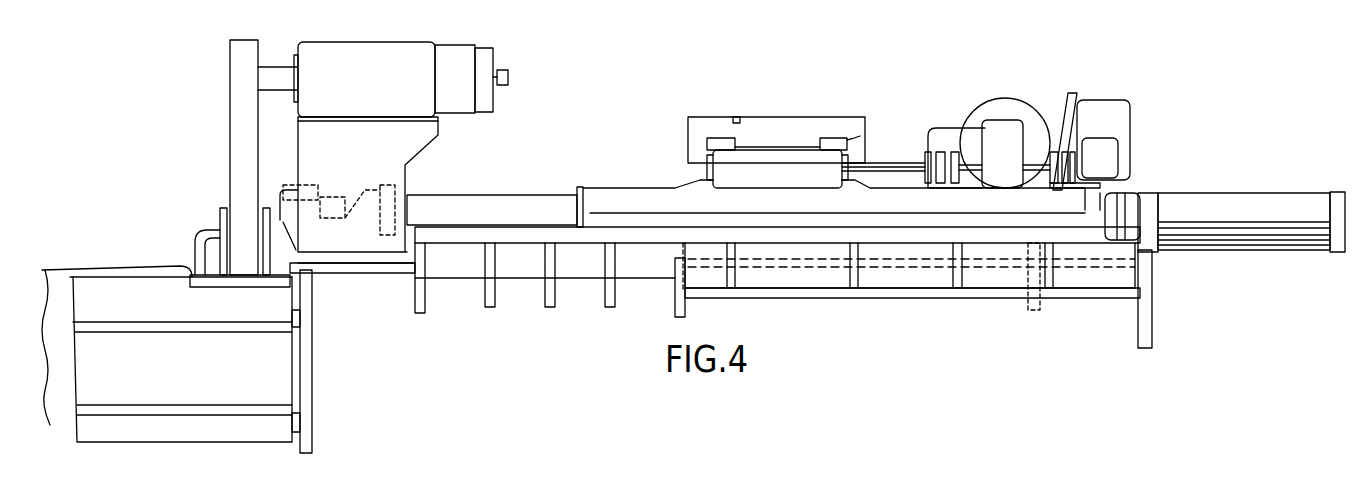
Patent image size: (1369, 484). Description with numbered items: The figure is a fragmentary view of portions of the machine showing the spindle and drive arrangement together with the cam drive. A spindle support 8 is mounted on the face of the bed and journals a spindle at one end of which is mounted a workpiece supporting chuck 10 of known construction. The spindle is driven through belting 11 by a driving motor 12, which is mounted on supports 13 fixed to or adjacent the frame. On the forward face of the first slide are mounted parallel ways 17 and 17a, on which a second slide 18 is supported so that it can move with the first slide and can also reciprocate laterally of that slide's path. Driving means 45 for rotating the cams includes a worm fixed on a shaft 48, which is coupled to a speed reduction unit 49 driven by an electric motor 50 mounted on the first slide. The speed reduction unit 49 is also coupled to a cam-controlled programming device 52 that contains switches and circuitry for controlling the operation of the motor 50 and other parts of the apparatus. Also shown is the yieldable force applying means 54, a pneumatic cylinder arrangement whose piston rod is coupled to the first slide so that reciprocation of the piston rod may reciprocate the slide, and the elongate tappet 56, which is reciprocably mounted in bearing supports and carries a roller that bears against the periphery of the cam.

The spindle support 8 is at (390, 56).
The workpiece supporting chuck 10 is at (488, 50).
The belting 11 is at (238, 137).
The driving motor 12 is at (116, 266).
The supports 13 is at (138, 442).
The parallel ways 17 is at (707, 144).
The parallel ways 17a is at (868, 136).
The second slide 18 is at (782, 117).
The driving means 45 is at (1052, 96).
The shaft 48 is at (898, 163).
The speed reduction unit 49 is at (1005, 120).
The electric motor 50 is at (966, 128).
The cam-controlled programming device 52 is at (1130, 121).
The yieldable force applying means 54 is at (1257, 184).
The tappet 56 is at (497, 197).